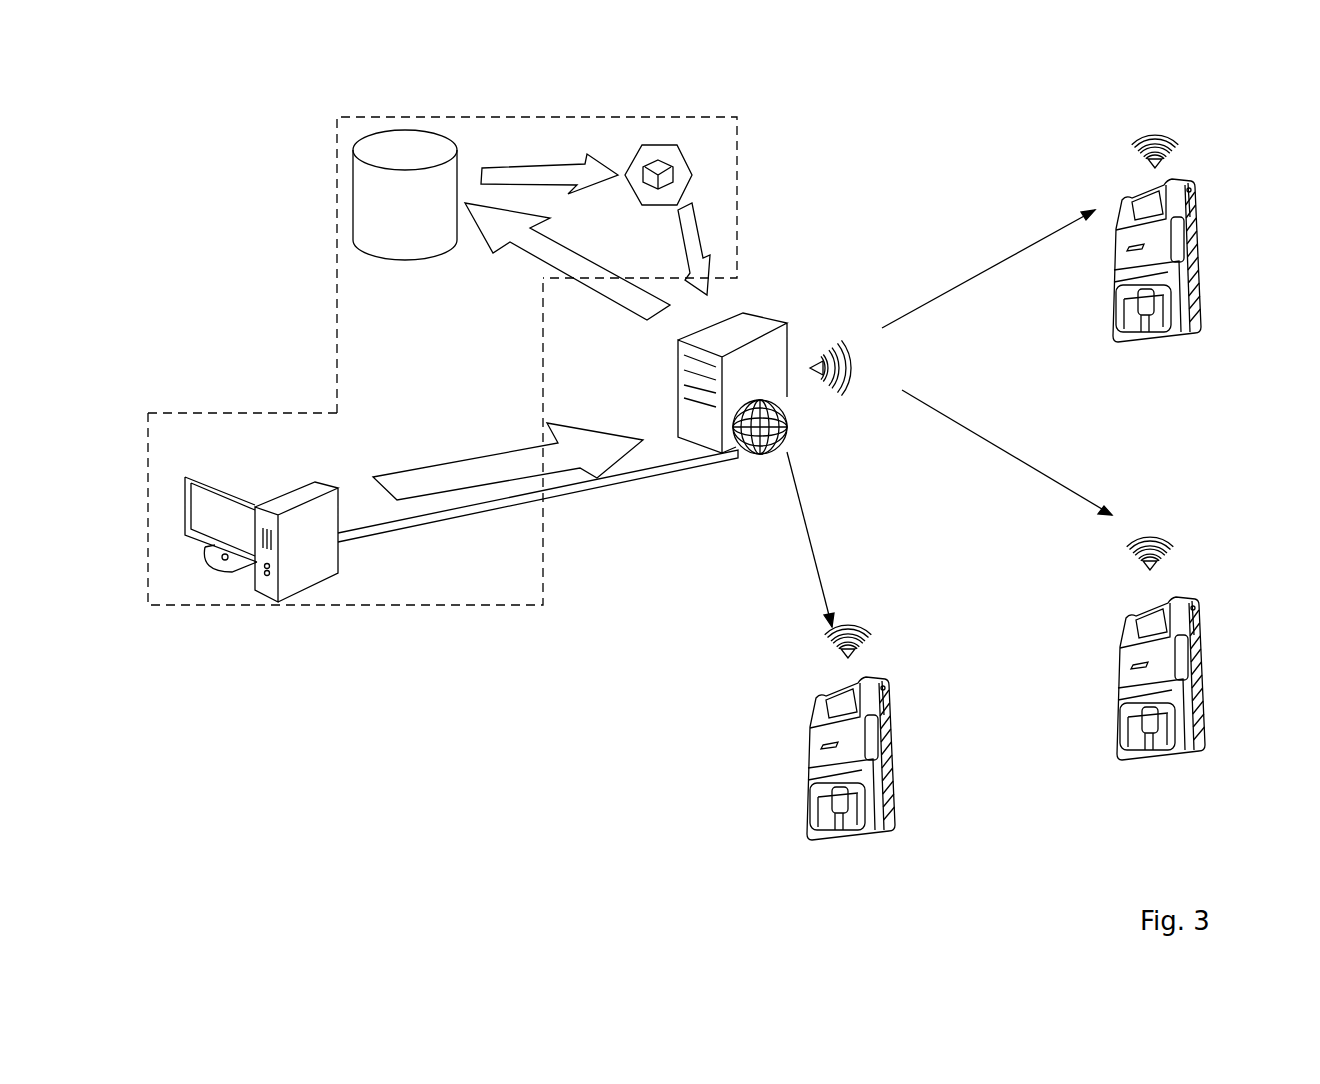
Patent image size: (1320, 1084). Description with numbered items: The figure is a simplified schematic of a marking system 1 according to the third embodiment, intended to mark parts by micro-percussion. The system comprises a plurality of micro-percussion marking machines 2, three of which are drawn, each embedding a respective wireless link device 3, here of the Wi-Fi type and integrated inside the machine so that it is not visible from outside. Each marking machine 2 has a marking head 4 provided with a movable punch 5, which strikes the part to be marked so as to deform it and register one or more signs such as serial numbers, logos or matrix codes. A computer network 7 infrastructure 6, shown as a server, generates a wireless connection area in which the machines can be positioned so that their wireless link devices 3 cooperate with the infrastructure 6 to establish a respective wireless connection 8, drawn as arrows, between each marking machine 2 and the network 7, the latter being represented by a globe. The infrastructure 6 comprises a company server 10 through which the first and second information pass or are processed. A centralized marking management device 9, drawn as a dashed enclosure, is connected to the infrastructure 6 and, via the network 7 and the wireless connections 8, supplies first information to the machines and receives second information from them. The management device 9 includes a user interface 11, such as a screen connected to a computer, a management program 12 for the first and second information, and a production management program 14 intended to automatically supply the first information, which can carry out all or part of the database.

The marking system 1 is at (214, 151).
The micro-percussion marking machine 2 is at (918, 668).
The wireless link device 3 is at (812, 735).
The marking head 4 is at (838, 802).
The movable punch 5 is at (842, 831).
The network infrastructure 6 is at (763, 315).
The computer network 7 is at (763, 454).
The wireless connection 8 is at (985, 268).
The centralized marking management device 9 is at (537, 117).
The company server 10 is at (765, 368).
The user interface 11 is at (205, 517).
The management program 12 is at (687, 157).
The production management program 14 is at (418, 150).